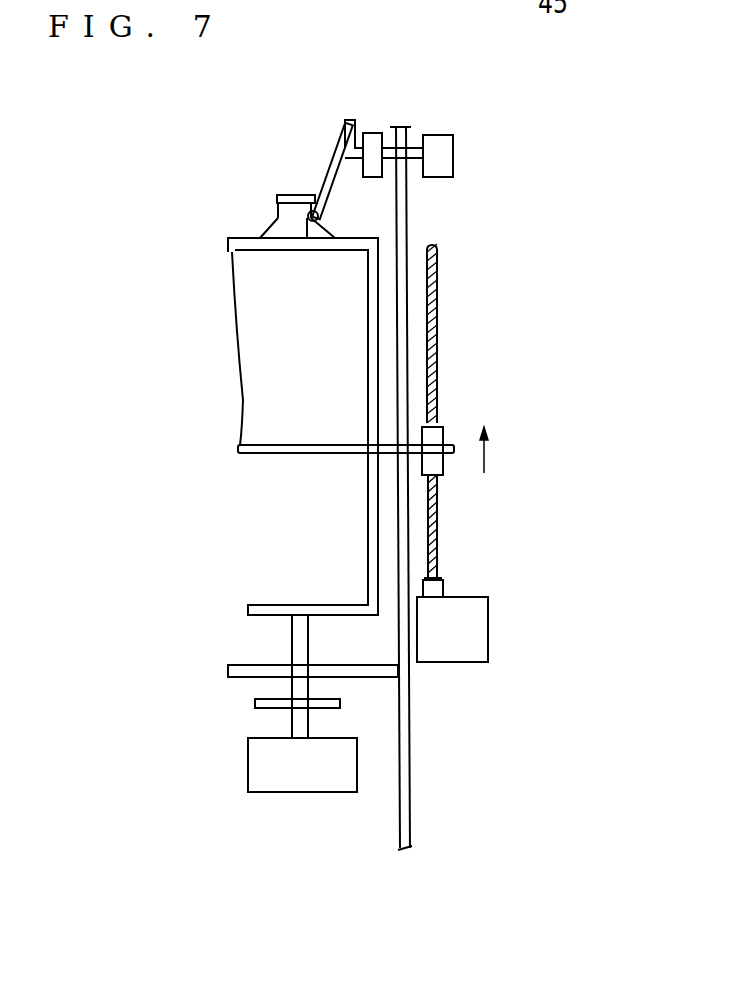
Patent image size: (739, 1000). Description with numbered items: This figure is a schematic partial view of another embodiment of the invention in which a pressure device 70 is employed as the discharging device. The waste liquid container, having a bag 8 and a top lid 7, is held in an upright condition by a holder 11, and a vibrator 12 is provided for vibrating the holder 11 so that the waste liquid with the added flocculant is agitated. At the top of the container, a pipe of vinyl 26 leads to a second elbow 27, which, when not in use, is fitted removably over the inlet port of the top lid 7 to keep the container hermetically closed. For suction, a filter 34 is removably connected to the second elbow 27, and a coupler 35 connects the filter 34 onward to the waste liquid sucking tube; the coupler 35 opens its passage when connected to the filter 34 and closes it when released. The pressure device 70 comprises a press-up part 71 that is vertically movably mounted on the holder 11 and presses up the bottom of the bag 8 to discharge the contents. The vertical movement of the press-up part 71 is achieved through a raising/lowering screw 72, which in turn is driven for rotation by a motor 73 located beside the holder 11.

The top lid 7 is at (238, 245).
The bag 8 is at (255, 360).
The holder 11 is at (360, 237).
The vibrator 12 is at (278, 792).
The pipe of vinyl 26 is at (330, 175).
The second elbow 27 is at (344, 120).
The filter 34 is at (373, 138).
The coupler 35 is at (437, 145).
The pressure device 70 is at (492, 501).
The press-up part 71 is at (278, 453).
The raising/lowering screw 72 is at (437, 355).
The motor 73 is at (477, 643).